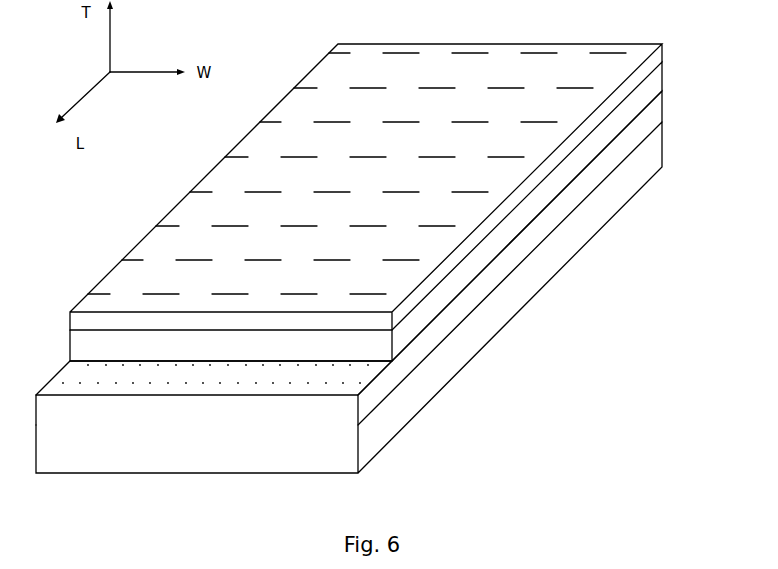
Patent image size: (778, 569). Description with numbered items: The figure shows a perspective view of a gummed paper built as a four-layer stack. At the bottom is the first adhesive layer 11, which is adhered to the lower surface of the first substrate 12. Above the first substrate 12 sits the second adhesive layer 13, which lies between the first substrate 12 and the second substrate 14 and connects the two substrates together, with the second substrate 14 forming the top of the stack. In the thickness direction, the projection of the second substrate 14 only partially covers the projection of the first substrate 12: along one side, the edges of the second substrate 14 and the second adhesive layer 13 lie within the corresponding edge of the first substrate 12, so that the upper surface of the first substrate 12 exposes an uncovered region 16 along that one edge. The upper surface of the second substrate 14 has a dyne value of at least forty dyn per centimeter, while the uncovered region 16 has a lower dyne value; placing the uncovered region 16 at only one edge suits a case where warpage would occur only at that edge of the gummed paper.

The first adhesive layer 11 is at (403, 403).
The first substrate 12 is at (433, 338).
The second adhesive layer 13 is at (483, 257).
The second substrate 14 is at (595, 120).
The uncovered region 16 is at (83, 377).